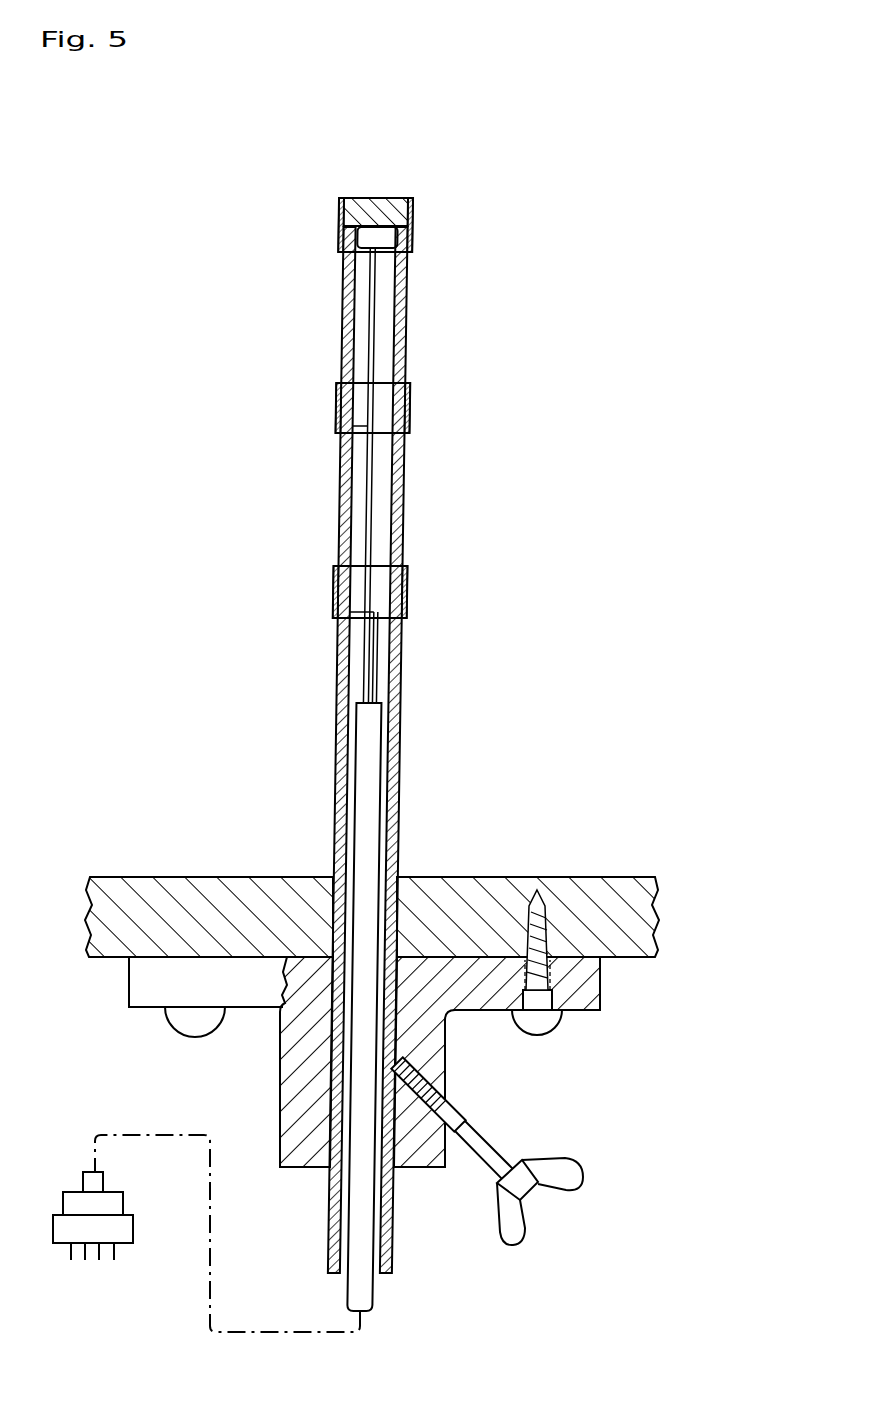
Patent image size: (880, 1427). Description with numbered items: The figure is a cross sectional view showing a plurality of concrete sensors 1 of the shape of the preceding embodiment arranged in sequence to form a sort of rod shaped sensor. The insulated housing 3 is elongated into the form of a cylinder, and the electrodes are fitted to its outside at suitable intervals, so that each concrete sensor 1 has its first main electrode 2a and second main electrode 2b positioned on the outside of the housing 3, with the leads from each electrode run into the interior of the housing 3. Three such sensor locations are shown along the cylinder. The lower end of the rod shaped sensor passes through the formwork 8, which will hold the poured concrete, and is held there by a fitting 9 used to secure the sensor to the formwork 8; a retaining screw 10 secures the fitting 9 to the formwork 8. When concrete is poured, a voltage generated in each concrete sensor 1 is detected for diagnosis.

The concrete sensor 1 is at (421, 209).
The first main electrode 2a is at (340, 242).
The second main electrode 2b is at (413, 236).
The housing 3 is at (343, 334).
The formwork 8 is at (657, 924).
The fitting 9 is at (600, 980).
The retaining screw 10 is at (548, 1022).